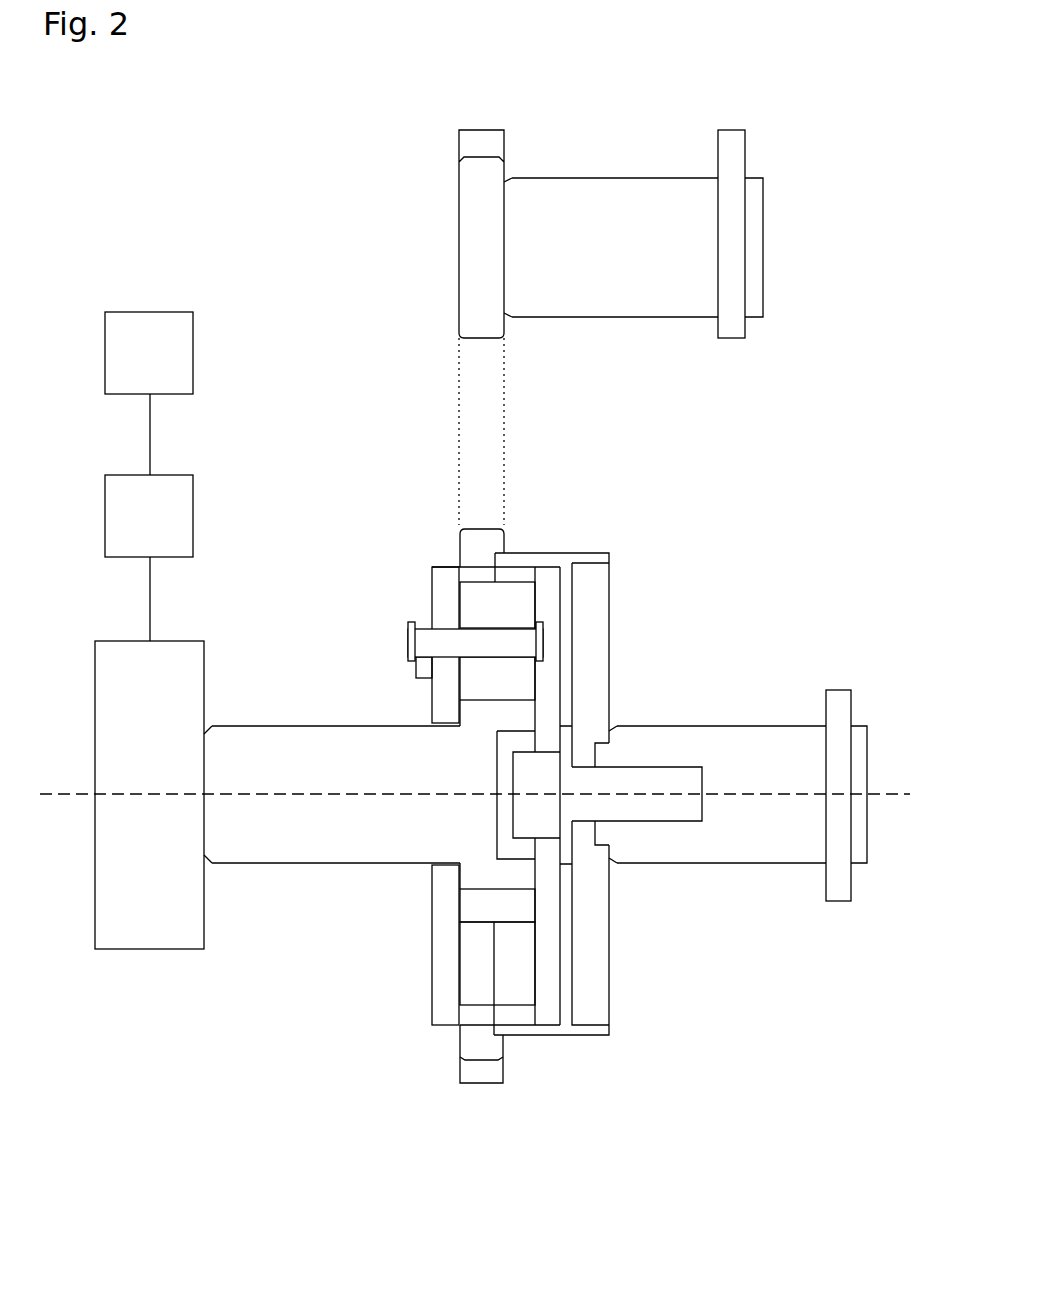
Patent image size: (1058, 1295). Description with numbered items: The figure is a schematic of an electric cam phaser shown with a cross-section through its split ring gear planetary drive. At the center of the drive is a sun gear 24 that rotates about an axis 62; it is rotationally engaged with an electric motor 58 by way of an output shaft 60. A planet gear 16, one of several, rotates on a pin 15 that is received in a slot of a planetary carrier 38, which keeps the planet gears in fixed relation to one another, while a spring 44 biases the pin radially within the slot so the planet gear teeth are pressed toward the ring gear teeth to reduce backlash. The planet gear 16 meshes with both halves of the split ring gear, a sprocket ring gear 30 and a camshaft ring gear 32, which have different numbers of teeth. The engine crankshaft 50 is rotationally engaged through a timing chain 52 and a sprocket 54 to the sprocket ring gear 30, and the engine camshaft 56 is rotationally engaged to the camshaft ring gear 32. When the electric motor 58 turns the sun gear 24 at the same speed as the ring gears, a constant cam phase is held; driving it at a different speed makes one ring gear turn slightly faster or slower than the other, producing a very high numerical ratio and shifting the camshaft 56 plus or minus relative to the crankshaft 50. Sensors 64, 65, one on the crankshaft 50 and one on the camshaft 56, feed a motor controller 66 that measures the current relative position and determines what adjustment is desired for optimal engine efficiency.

The pin 15 is at (533, 640).
The planet gear 16 is at (482, 617).
The sun gear 24 is at (467, 730).
The sprocket ring gear 30 is at (461, 977).
The camshaft ring gear 32 is at (515, 577).
The planetary carrier 38 is at (438, 709).
The spring 44 is at (417, 667).
The engine crankshaft 50 is at (615, 262).
The timing chain 52 is at (482, 140).
The sprocket 54 is at (480, 543).
The engine camshaft 56 is at (756, 840).
The electric motor 58 is at (135, 742).
The output shaft 60 is at (311, 769).
The axis 62 is at (480, 780).
The sensor 64 is at (113, 365).
The sensor 65 is at (740, 152).
The motor controller 66 is at (135, 530).